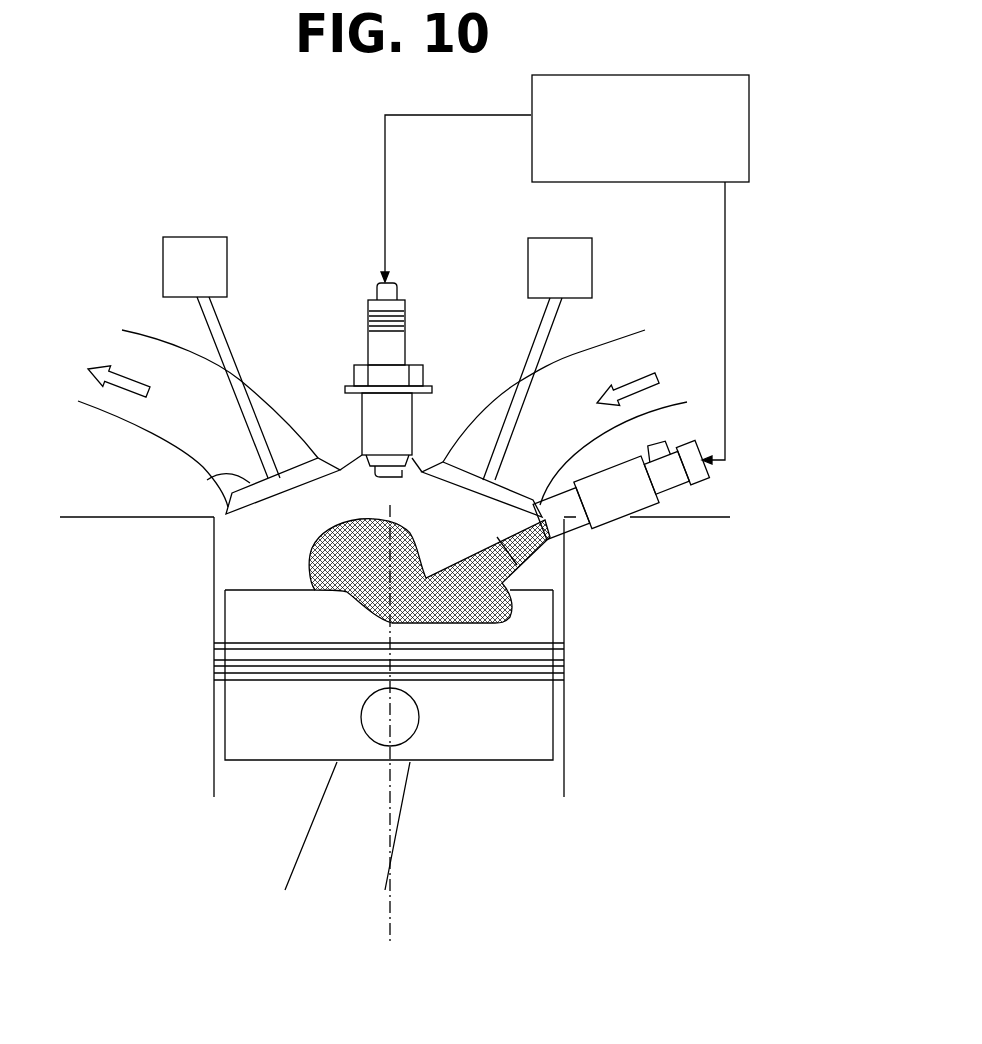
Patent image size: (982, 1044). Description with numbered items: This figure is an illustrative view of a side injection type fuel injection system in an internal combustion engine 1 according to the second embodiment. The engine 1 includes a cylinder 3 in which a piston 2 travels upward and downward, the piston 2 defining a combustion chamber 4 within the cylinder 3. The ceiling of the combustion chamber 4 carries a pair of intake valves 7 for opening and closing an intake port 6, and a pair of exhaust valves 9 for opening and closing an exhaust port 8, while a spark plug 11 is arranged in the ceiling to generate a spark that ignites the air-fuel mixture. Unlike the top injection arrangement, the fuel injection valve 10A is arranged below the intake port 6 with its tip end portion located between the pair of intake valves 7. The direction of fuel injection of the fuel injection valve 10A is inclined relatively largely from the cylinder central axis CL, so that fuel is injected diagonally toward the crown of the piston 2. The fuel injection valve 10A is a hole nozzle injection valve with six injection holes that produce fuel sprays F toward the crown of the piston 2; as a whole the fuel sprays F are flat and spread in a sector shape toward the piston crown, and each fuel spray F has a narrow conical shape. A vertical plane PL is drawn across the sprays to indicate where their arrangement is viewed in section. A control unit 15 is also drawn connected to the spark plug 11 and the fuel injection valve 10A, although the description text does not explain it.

The internal combustion engine 1 is at (603, 725).
The piston 2 is at (462, 745).
The cylinder 3 is at (214, 795).
The combustion chamber 4 is at (235, 542).
The intake port 6 is at (612, 365).
The intake valve 7 is at (470, 480).
The exhaust port 8 is at (160, 358).
The exhaust valve 9 is at (207, 478).
The fuel injection valve 10A is at (608, 505).
The spark plug 11 is at (365, 350).
The electronic control unit 15 is at (752, 116).
The fuel spray F is at (540, 535).
The vertical plane PL is at (520, 568).
The cylinder central axis CL is at (397, 742).